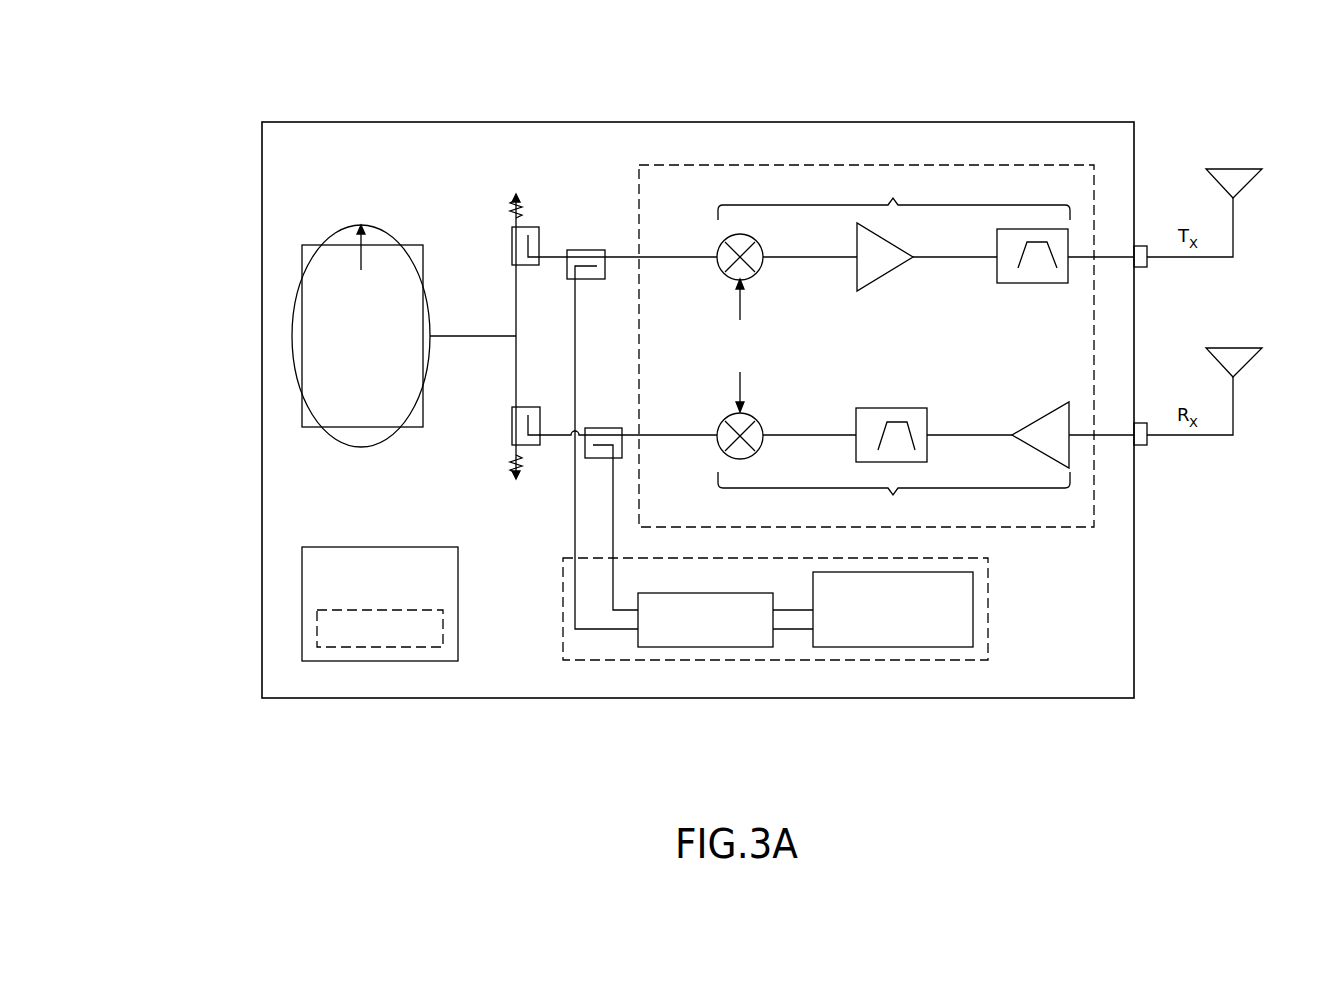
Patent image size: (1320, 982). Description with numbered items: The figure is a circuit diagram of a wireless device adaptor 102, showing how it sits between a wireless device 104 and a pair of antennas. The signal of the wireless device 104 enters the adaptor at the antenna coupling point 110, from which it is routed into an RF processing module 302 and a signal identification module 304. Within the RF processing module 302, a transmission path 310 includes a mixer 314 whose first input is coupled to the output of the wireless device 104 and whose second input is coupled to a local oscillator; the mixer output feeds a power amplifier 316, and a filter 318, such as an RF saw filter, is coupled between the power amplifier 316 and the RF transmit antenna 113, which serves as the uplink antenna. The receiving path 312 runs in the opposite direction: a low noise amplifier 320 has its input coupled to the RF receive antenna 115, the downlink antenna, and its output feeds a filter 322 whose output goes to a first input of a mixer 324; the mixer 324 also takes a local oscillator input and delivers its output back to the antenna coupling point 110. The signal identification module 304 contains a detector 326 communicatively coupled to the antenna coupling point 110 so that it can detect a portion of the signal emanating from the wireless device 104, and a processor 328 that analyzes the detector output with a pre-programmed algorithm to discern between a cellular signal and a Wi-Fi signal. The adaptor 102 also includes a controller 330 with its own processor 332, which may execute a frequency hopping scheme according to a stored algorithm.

The adaptor 102 is at (307, 121).
The wireless device 104 is at (327, 322).
The antenna coupling point 110 is at (432, 337).
The RF transmit antenna 113 is at (1233, 182).
The RF receive antenna 115 is at (1233, 360).
The RF processing module 302 is at (867, 163).
The signal identification module 304 is at (563, 608).
The transmission path 310 is at (894, 197).
The receiving path 312 is at (894, 496).
The mixer 314 is at (732, 278).
The power amplifier 316 is at (880, 277).
The filter 318 is at (1032, 283).
The low noise amplifier 320 is at (1045, 413).
The filter 322 is at (892, 408).
The mixer 324 is at (730, 412).
The detector 326 is at (705, 647).
The processor 328 is at (893, 647).
The controller 330 is at (302, 568).
The processor 332 is at (317, 627).